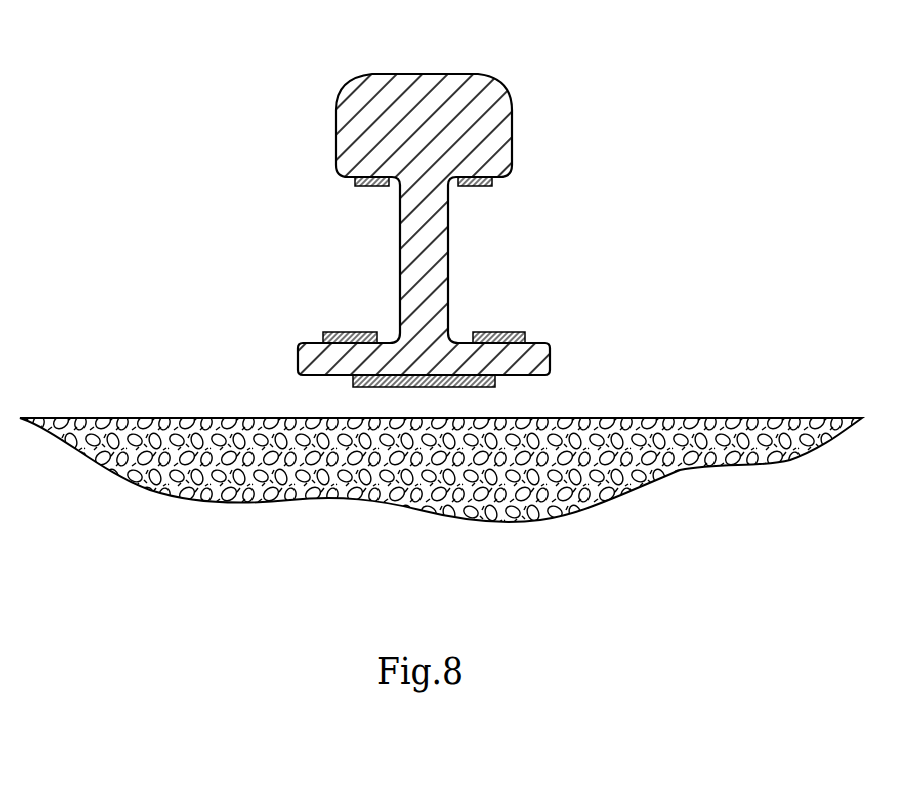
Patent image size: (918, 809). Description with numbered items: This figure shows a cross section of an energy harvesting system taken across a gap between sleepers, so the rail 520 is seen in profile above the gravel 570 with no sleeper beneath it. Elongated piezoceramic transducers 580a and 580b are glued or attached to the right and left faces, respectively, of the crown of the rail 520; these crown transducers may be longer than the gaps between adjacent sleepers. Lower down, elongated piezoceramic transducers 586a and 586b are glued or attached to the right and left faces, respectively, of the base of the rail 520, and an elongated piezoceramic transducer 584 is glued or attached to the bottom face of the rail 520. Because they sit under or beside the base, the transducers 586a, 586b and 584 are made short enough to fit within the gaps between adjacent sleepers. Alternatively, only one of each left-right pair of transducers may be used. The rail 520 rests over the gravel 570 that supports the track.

The rail 520 is at (368, 82).
The elongated piezoceramic transducer 580a is at (476, 187).
The elongated piezoceramic transducer 580b is at (371, 187).
The elongated piezoceramic transducer 586a is at (498, 332).
The elongated piezoceramic transducer 586b is at (352, 332).
The elongated piezoceramic transducer 584 is at (412, 388).
The gravel 570 is at (710, 463).